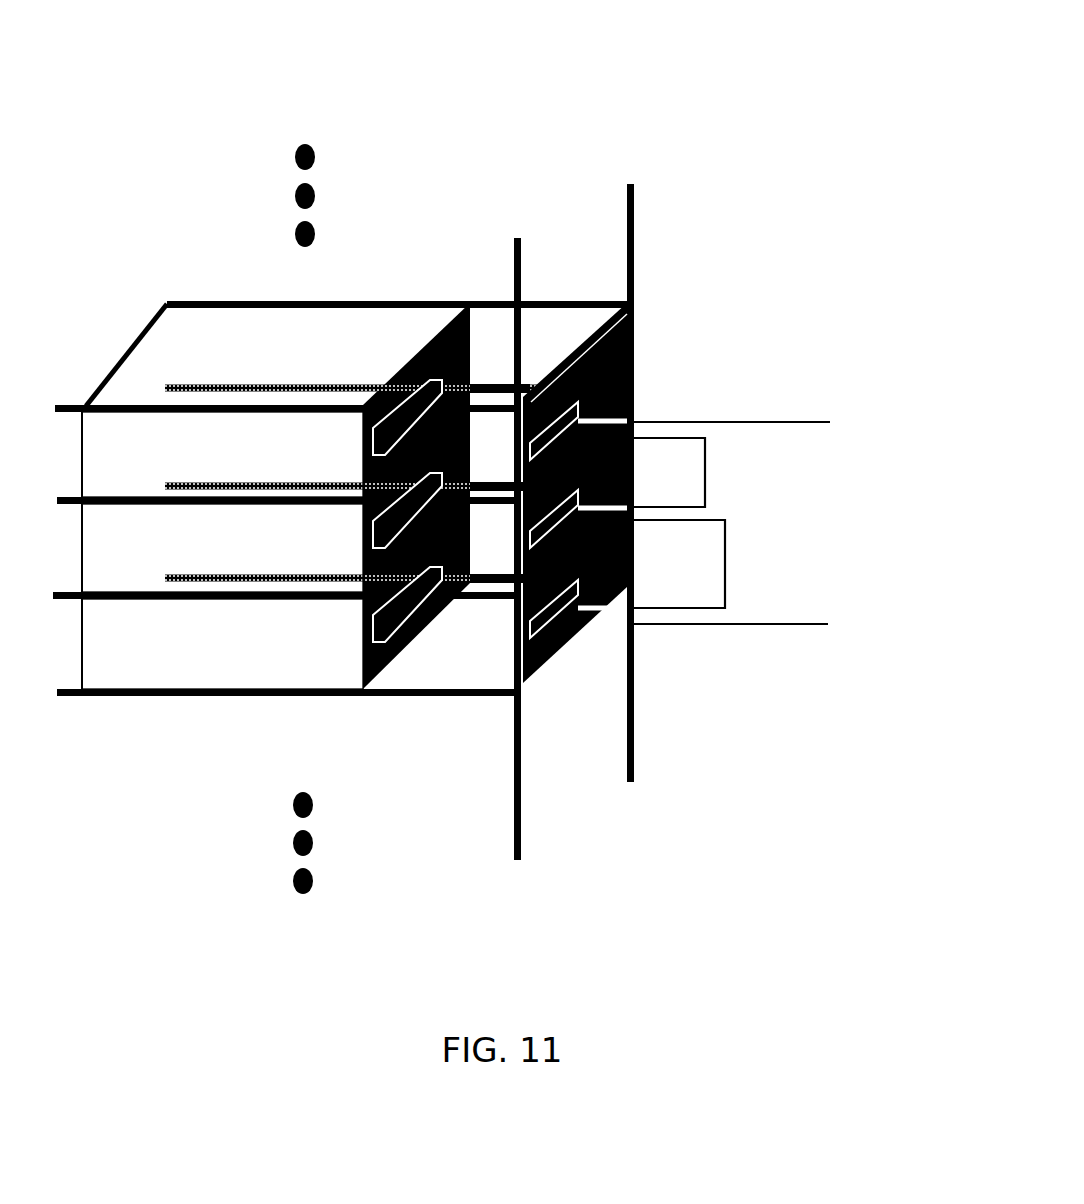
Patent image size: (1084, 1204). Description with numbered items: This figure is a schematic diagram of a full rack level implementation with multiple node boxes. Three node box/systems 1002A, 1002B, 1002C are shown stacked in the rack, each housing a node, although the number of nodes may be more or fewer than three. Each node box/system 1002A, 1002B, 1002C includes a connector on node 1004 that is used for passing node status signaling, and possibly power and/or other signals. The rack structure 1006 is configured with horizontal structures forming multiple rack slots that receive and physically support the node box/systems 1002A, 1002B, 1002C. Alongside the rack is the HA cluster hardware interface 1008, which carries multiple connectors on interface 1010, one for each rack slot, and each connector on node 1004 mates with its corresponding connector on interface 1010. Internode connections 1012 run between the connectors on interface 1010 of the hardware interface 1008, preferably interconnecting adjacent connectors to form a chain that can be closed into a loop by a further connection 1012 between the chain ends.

The node box/system 1002A is at (222, 454).
The node box/system 1002B is at (222, 548).
The node box/system 1002C is at (222, 644).
The connector on node 1004 is at (414, 590).
The rack structure 1006 is at (627, 220).
The HA cluster hardware interface 1008 is at (597, 357).
The connector on interface 1010 is at (533, 627).
The internode connection 1012 is at (727, 545).